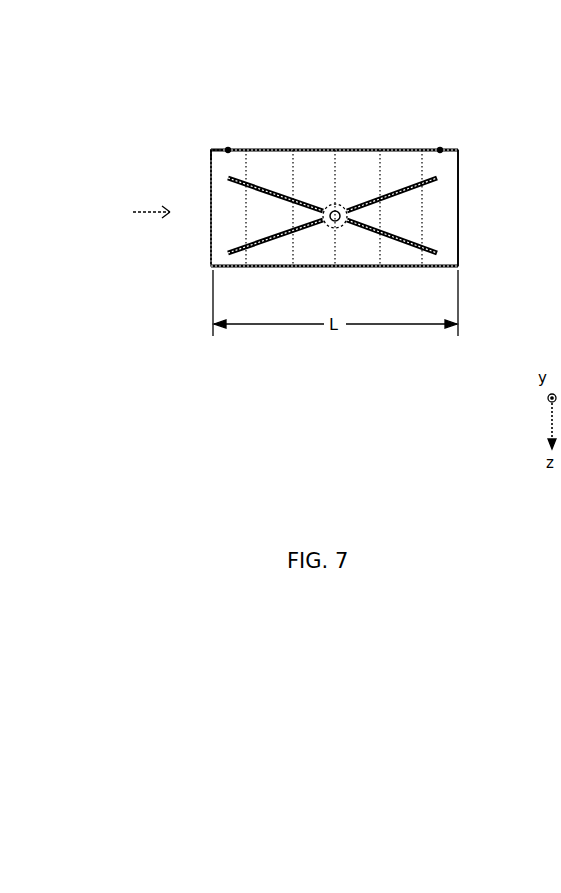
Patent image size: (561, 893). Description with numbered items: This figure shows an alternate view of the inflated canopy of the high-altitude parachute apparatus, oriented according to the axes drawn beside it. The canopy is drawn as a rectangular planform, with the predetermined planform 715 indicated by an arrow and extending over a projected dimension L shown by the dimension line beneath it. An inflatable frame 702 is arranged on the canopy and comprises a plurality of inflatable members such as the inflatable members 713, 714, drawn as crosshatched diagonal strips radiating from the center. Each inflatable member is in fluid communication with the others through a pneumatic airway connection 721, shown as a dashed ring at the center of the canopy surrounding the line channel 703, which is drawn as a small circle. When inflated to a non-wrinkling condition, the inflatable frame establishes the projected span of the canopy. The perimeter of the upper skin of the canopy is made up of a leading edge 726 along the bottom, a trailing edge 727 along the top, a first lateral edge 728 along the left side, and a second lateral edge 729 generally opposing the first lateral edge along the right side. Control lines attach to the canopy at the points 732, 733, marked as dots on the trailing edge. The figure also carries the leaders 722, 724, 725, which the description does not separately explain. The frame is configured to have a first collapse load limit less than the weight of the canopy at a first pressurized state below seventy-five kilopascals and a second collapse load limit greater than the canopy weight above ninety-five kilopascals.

The inflatable frame 702 is at (438, 236).
The line channel 703 is at (338, 222).
The inflatable member 713 is at (389, 256).
The inflatable member 714 is at (271, 197).
The predetermined planform 715 is at (135, 212).
The pneumatic airway connection 721 is at (341, 204).
The top-left corner 722 is at (211, 154).
The upper right reflective strip 724 is at (418, 174).
The boundary line 725 is at (381, 178).
The leading edge 726 is at (279, 267).
The trailing edge 727 is at (280, 150).
The first lateral edge 728 is at (211, 195).
The second lateral edge 729 is at (459, 176).
The control line attachment 732 is at (441, 149).
The control line attachment 733 is at (227, 149).